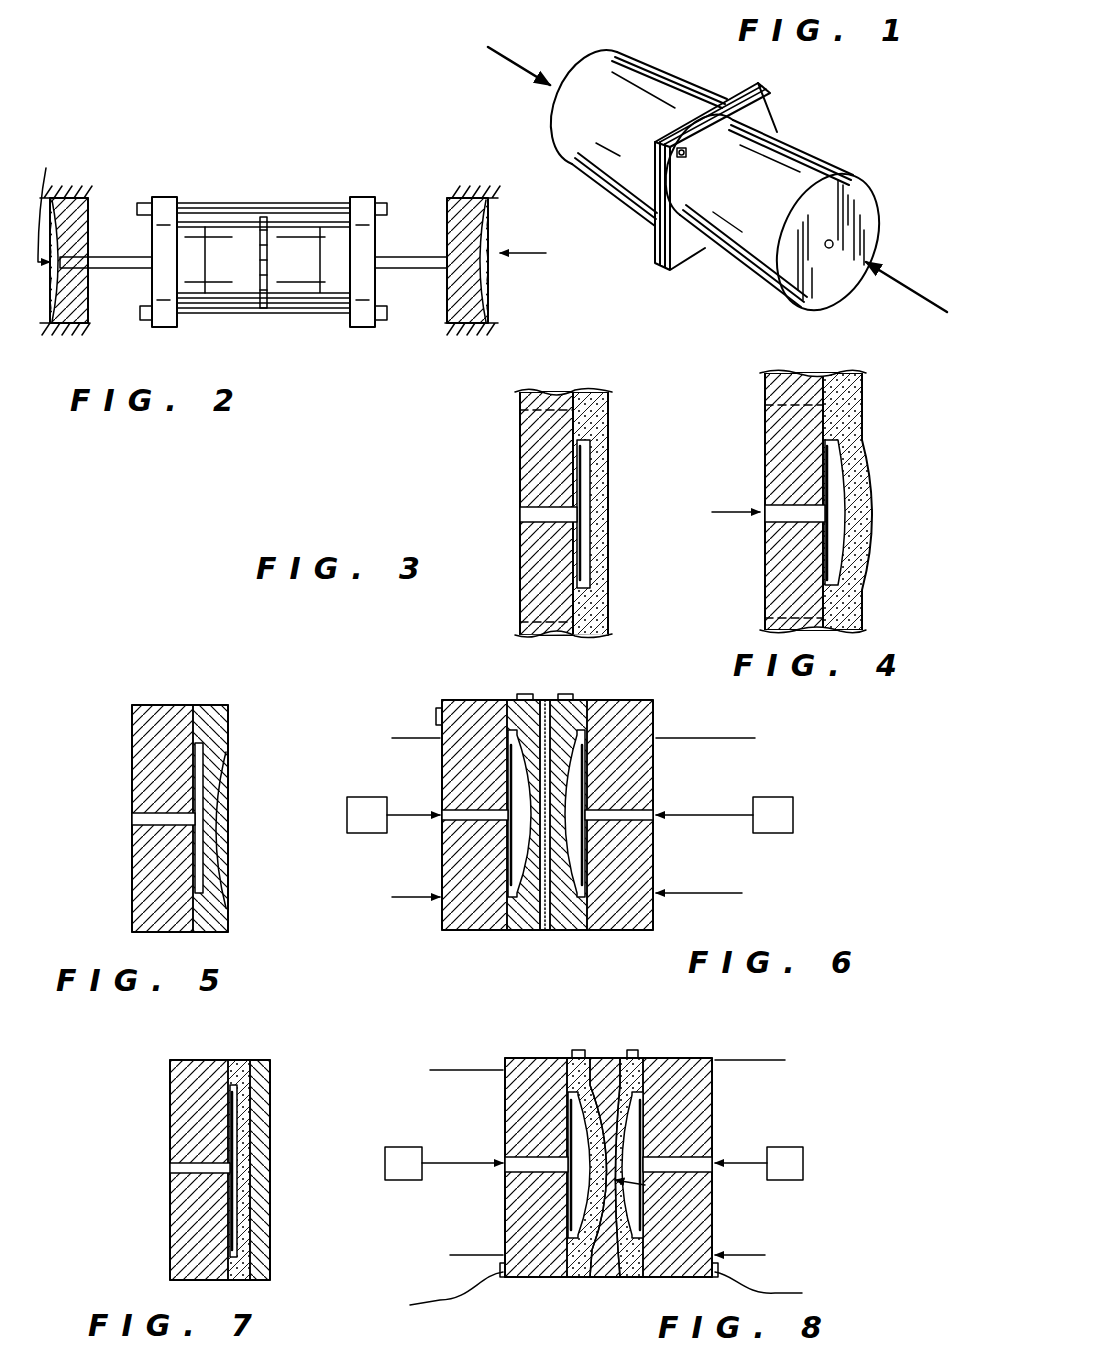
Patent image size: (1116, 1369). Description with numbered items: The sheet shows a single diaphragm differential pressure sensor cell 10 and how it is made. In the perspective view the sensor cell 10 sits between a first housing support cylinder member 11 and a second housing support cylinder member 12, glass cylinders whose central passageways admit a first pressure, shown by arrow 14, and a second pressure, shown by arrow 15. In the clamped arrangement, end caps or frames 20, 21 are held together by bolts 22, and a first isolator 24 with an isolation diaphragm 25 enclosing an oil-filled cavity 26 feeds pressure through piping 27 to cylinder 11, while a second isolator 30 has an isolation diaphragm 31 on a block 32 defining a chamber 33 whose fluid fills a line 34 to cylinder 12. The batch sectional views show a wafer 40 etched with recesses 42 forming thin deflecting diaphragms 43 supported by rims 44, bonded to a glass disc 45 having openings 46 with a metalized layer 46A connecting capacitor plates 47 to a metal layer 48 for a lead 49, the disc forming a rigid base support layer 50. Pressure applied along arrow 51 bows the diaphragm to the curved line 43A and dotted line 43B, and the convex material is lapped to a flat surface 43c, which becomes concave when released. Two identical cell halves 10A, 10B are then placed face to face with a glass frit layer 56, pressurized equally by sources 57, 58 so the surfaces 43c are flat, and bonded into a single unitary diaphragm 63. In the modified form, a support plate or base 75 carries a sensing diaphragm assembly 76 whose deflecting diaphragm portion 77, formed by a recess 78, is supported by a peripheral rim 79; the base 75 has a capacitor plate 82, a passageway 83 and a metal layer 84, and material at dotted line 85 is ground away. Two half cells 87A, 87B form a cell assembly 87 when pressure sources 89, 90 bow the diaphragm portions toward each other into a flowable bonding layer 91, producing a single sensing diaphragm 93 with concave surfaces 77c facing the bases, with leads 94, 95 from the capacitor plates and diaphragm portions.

In FIG. 1, the single diaphragm differential pressure sensor cell 10 is at (725, 95).
In FIG. 2, the single diaphragm differential pressure sensor cell 10 is at (268, 250).
In FIG. 6, the single diaphragm differential pressure sensor cell 10 is at (594, 800).
In FIG. 5, the cell half 10A is at (190, 705).
In FIG. 6, the cell half 10A is at (490, 700).
In FIG. 6, the cell half 10B is at (610, 700).
In FIG. 1, the first housing support cylinder member 11 is at (800, 168).
In FIG. 2, the first housing support cylinder member 11 is at (318, 296).
In FIG. 1, the second housing support cylinder member 12 is at (628, 76).
In FIG. 2, the second housing support cylinder member 12 is at (232, 296).
In FIG. 1, the arrow representing pressure P1 14 is at (921, 300).
In FIG. 2, the arrow representing pressure P1 14 is at (522, 262).
In FIG. 1, the arrow representing pressure P2 15 is at (496, 50).
In FIG. 2, the arrow representing pressure P2 15 is at (52, 201).
In FIG. 2, the end cap or frame 20 is at (362, 197).
In FIG. 2, the end cap or frame 21 is at (165, 197).
In FIG. 2, the bolts 22 is at (273, 205).
In FIG. 2, the first isolator 24 is at (438, 315).
In FIG. 2, the isolation diaphragm 25 is at (490, 300).
In FIG. 2, the cavity 26 is at (462, 228).
In FIG. 2, the piping 27 is at (412, 270).
In FIG. 2, the second isolator 30 is at (82, 323).
In FIG. 2, the isolation diaphragm 31 is at (76, 198).
In FIG. 2, the support or block 32 is at (88, 208).
In FIG. 2, the chamber 33 is at (58, 272).
In FIG. 2, the line 34 is at (152, 268).
In FIG. 3, the wafer 40 is at (532, 489).
In FIG. 4, the wafer 40 is at (815, 487).
In FIG. 5, the wafer 40 is at (172, 771).
In FIG. 3, the recesses 42 is at (582, 450).
In FIG. 5, the recesses 42 is at (197, 752).
In FIG. 6, the recesses 42 is at (580, 735).
In FIG. 3, the deflecting diaphragm 43 is at (603, 555).
In FIG. 4, the deflecting diaphragm 43 is at (858, 505).
In FIG. 5, the deflecting diaphragm 43 is at (212, 790).
In FIG. 6, the deflecting diaphragm 43 is at (567, 758).
In FIG. 4, the diaphragm surface 43A is at (843, 520).
In FIG. 4, the dotted line of bowed convex portion 43B is at (868, 478).
In FIG. 4, the flat surface 43c is at (862, 590).
In FIG. 5, the flat surface 43c is at (216, 825).
In FIG. 6, the flat surface 43c is at (528, 788).
In FIG. 3, the rims 44 is at (590, 608).
In FIG. 4, the rims 44 is at (845, 425).
In FIG. 5, the rims 44 is at (212, 735).
In FIG. 3, the glass disc 45 is at (520, 434).
In FIG. 4, the glass disc 45 is at (790, 388).
In FIG. 3, the passageways or openings 46 is at (548, 505).
In FIG. 5, the passageways or openings 46 is at (132, 820).
In FIG. 6, the passageways or openings 46 is at (475, 815).
In FIG. 3, the metalized layer 46A is at (532, 512).
In FIG. 5, the metalized layer 46A is at (145, 845).
In FIG. 3, the capacitor plates 47 is at (577, 488).
In FIG. 4, the capacitor plates 47 is at (826, 468).
In FIG. 5, the capacitor plates 47 is at (197, 775).
In FIG. 6, the capacitor plates 47 is at (545, 902).
In FIG. 3, the metal layer 48 is at (520, 420).
In FIG. 5, the metal layer 48 is at (132, 766).
In FIG. 6, the lead 49 is at (437, 714).
In FIG. 3, the rigid base support layer 50 is at (545, 555).
In FIG. 4, the rigid base support layer 50 is at (778, 430).
In FIG. 5, the rigid base support layer 50 is at (160, 700).
In FIG. 6, the rigid base support layer 50 is at (467, 715).
In FIG. 4, the arrow indicating applied pressure 51 is at (722, 520).
In FIG. 6, the glass frit or bonding material layer 56 is at (545, 700).
In FIG. 6, the pressure source 57 is at (798, 815).
In FIG. 6, the pressure source 58 is at (377, 797).
In FIG. 6, the single unitary diaphragm 63 is at (556, 776).
In FIG. 7, the support plate or base 75 is at (205, 1078).
In FIG. 8, the support plate or base 75 is at (680, 1060).
In FIG. 7, the sensing diaphragm assembly 76 is at (245, 1235).
In FIG. 8, the sensing diaphragm assembly 76 is at (630, 1280).
In FIG. 7, the deflecting pressure sensing diaphragm portion 77 is at (240, 1118).
In FIG. 8, the deflecting pressure sensing diaphragm portion 77 is at (588, 1125).
In FIG. 8, the concave diaphragm surface 77c is at (623, 1140).
In FIG. 7, the recess 78 is at (237, 1170).
In FIG. 7, the peripheral rim 79 is at (240, 1065).
In FIG. 8, the peripheral rim 79 is at (585, 1280).
In FIG. 7, the capacitor plate 82 is at (235, 1145).
In FIG. 8, the capacitor plate 82 is at (640, 1210).
In FIG. 7, the passageway 83 is at (180, 1172).
In FIG. 8, the passageway 83 is at (525, 1163).
In FIG. 7, the layer of metal 84 is at (172, 1218).
In FIG. 8, the layer of metal 84 is at (507, 1228).
In FIG. 7, the dotted line portion of removed material 85 is at (268, 1085).
In FIG. 7, the cell assembly 87 is at (210, 1160).
In FIG. 8, the cell assembly 87 is at (626, 1166).
In FIG. 8, the half cell 87A is at (535, 1072).
In FIG. 8, the half cell 87B is at (700, 1088).
In FIG. 8, the pressure source 89 is at (410, 1180).
In FIG. 8, the pressure source 90 is at (803, 1163).
In FIG. 8, the bonding layer 91 is at (605, 1058).
In FIG. 8, the single sensing diaphragm 93 is at (645, 1185).
In FIG. 8, the leads 94 is at (440, 1305).
In FIG. 8, the leads 95 is at (578, 1050).